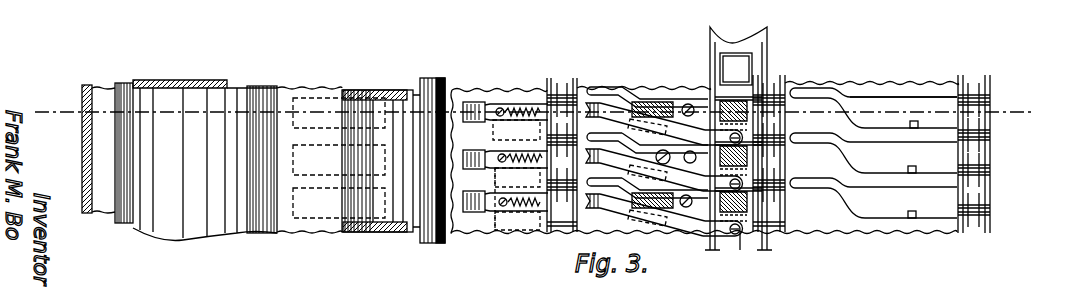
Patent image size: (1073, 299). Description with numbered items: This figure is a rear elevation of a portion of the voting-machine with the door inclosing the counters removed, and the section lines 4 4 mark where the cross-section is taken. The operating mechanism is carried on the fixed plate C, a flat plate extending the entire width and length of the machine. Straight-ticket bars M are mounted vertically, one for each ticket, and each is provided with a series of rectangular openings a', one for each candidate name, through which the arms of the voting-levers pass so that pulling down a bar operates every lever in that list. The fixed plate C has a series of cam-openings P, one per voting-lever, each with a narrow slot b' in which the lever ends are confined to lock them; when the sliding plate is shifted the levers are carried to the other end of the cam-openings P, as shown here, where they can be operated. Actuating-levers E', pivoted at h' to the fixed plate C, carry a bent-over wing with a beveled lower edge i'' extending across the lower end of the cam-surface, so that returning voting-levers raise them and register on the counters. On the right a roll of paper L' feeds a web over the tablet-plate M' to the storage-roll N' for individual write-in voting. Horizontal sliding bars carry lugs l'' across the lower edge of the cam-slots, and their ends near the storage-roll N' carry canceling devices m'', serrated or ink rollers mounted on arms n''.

The section lines 4 4 is at (535, 103).
The roll of paper L' is at (196, 160).
The tablet-plate M' is at (309, 144).
The rectangular openings a' is at (339, 158).
The storage-roll N' is at (377, 145).
The fixed plate C is at (495, 93).
The canceling devices m'' is at (500, 101).
The arms n'' is at (505, 157).
The beveled lower edge i'' is at (505, 199).
The actuating-levers E' is at (664, 142).
The straight-ticket bars M is at (756, 138).
The pivot h' is at (738, 251).
The narrow slot b' is at (873, 134).
The cam-openings P is at (887, 105).
The lugs l'' is at (902, 169).